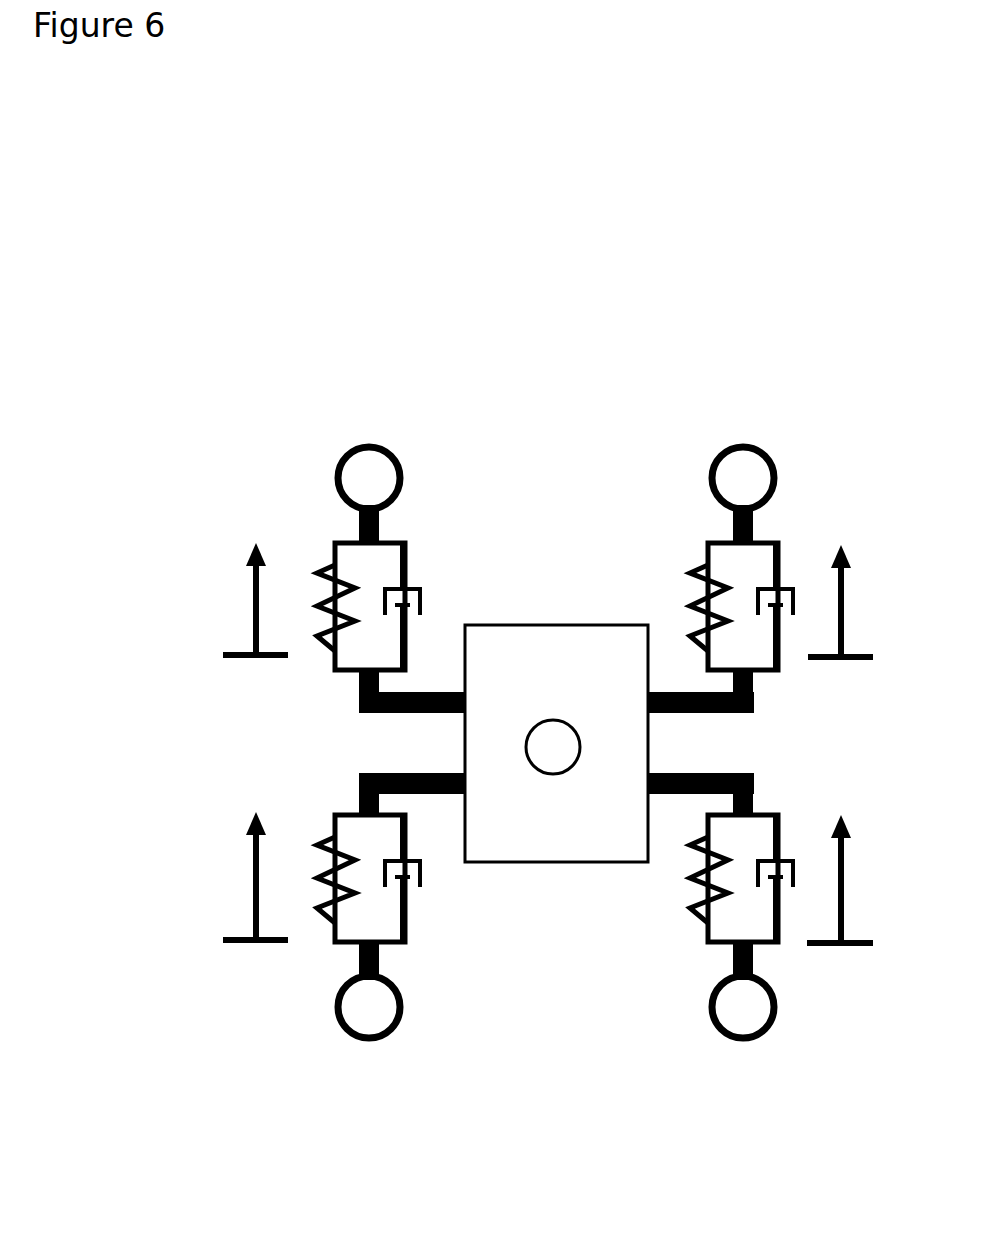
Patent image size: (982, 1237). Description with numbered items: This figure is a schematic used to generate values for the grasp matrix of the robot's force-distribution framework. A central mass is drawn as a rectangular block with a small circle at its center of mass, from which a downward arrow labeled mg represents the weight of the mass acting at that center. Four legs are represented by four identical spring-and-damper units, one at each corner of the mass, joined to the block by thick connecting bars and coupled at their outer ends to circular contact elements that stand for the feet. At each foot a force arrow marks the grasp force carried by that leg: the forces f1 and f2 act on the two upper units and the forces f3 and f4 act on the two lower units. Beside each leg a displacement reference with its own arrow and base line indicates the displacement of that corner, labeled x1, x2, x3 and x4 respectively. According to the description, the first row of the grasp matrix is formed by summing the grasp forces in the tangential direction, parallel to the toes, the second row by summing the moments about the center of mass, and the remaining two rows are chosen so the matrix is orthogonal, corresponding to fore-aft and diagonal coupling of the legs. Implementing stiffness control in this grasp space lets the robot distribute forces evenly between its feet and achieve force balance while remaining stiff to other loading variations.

The actuator force at first corner f1 is at (369, 422).
The actuator force at second corner f2 is at (743, 422).
The actuator force at third corner f3 is at (369, 1057).
The actuator force at fourth corner f4 is at (743, 1057).
The displacement at first corner x1 is at (252, 599).
The displacement at second corner x2 is at (854, 601).
The displacement at third corner x3 is at (252, 876).
The displacement at fourth corner x4 is at (854, 879).
The gravitational force on mass mg is at (553, 774).